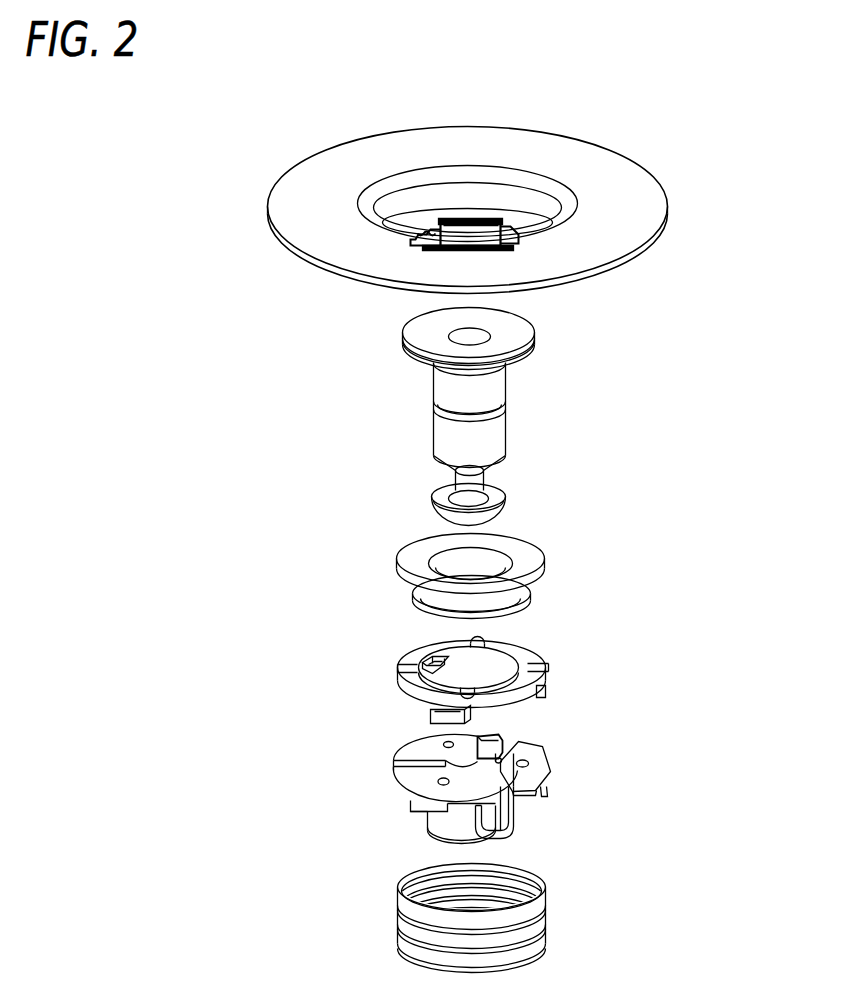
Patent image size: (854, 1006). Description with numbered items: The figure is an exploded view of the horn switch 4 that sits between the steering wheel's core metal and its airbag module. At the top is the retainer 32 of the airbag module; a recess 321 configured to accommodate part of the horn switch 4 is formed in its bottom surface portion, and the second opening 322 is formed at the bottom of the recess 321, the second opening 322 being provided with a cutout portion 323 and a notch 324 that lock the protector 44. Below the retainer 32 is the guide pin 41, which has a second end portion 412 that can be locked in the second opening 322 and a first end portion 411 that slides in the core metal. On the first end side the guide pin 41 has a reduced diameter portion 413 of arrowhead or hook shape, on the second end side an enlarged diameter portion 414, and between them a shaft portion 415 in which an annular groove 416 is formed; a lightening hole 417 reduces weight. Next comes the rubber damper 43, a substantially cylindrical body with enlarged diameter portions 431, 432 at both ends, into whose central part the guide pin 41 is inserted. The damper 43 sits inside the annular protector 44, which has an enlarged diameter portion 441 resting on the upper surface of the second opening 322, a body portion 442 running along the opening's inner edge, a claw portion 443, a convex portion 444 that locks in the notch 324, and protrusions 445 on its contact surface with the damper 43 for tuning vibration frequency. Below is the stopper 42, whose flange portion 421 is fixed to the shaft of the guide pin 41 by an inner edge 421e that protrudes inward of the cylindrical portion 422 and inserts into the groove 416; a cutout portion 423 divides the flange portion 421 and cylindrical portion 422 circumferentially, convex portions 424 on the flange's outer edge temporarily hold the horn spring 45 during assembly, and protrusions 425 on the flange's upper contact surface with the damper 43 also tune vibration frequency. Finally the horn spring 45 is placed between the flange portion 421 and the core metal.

The horn switch 4 is at (685, 114).
The retainer 32 is at (346, 161).
The recess 321 is at (459, 182).
The second opening 322 is at (510, 237).
The cutout portion 323 is at (484, 219).
The notch 324 is at (422, 228).
The guide pin 41 is at (545, 406).
The first end portion 411 is at (511, 485).
The second end portion 412 is at (548, 338).
The reduced diameter portion 413 is at (450, 477).
The enlarged diameter portion 414 is at (402, 337).
The shaft portion 415 is at (441, 381).
The annular groove 416 is at (440, 410).
The lightening hole 417 is at (444, 332).
The damper 43 is at (548, 549).
The enlarged diameter portion 431 is at (400, 567).
The enlarged diameter portion 432 is at (529, 603).
The protector 44 is at (530, 634).
The enlarged diameter portion 441 is at (544, 665).
The body portion 442 is at (542, 702).
The claw portion 443 is at (441, 713).
The convex portion 444 is at (429, 660).
The protrusions 445 is at (466, 640).
The stopper 42 is at (560, 751).
The flange portion 421 is at (393, 757).
The inner edge 421e is at (481, 746).
The cylindrical portion 422 is at (431, 823).
The cutout portion 423 is at (512, 810).
The convex portions 424 is at (408, 797).
The protrusions 425 is at (443, 742).
The horn spring 45 is at (545, 911).